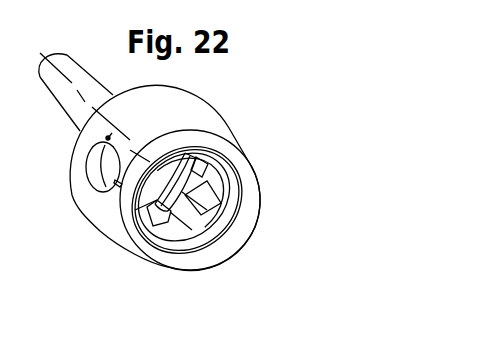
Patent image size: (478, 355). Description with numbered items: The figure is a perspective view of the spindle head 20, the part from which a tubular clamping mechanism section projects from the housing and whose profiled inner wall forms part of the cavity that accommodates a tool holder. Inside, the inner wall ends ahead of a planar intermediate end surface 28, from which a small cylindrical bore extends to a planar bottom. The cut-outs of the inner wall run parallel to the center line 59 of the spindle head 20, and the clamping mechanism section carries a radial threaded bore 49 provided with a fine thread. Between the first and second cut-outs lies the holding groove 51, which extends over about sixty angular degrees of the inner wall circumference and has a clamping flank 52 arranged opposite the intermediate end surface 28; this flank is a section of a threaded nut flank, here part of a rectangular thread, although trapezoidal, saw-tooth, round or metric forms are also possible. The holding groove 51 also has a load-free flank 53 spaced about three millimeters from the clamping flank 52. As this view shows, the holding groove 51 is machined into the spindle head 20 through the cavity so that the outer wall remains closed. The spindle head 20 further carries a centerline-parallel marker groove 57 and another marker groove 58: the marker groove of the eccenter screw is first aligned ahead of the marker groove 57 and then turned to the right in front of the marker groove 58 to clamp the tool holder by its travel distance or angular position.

The spindle head 20 is at (207, 105).
The intermediate end surface 28 is at (145, 196).
The radial threaded bore 49 is at (96, 174).
The holding groove 51 is at (172, 205).
The clamping flank 52 is at (200, 180).
The load-free flank 53 is at (167, 204).
The marker groove 57 is at (117, 185).
The marker groove 58 is at (108, 138).
The center line 59 is at (237, 246).